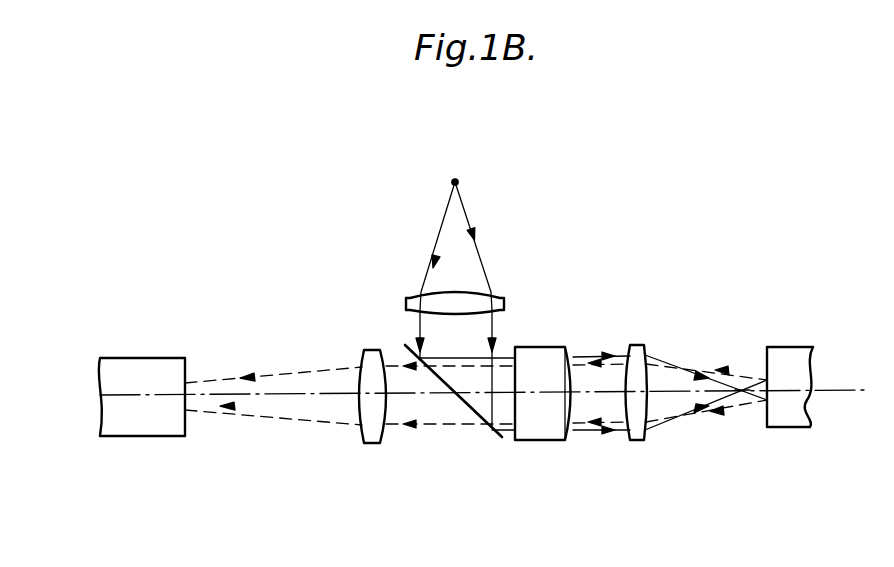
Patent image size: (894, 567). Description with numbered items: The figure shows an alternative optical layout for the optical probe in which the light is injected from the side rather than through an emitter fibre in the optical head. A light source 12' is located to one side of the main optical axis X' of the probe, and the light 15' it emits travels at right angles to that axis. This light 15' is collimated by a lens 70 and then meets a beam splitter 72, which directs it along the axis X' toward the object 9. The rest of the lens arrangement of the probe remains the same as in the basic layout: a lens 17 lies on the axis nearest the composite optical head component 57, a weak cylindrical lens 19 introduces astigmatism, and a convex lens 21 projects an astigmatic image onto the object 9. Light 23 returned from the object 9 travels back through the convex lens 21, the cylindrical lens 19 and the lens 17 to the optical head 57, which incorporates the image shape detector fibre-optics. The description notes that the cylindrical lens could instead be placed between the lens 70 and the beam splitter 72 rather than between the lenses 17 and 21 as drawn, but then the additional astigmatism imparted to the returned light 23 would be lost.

The composite optical head component 57 is at (167, 440).
The returned light 23 is at (263, 375).
The collimating lens 17 is at (372, 444).
The beam splitter 72 is at (496, 436).
The weak cylindrical lens 19 is at (553, 441).
The convex lens 21 is at (633, 441).
The object 9 is at (784, 352).
The main optical axis X' is at (789, 422).
The collimating lens 70 is at (504, 299).
The light source 12' is at (483, 160).
The injected light 15' is at (591, 306).